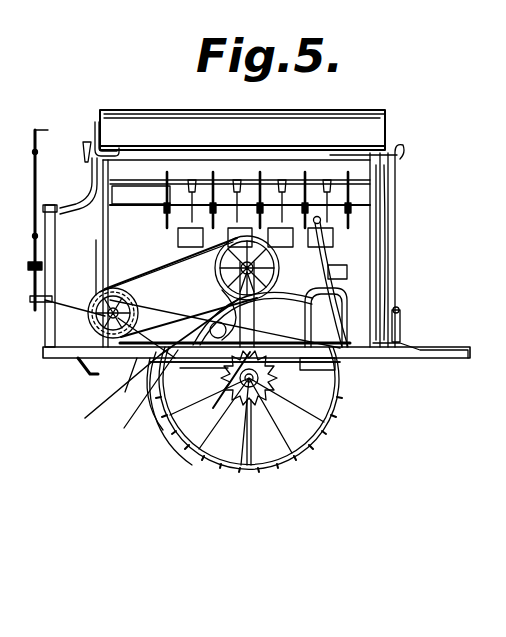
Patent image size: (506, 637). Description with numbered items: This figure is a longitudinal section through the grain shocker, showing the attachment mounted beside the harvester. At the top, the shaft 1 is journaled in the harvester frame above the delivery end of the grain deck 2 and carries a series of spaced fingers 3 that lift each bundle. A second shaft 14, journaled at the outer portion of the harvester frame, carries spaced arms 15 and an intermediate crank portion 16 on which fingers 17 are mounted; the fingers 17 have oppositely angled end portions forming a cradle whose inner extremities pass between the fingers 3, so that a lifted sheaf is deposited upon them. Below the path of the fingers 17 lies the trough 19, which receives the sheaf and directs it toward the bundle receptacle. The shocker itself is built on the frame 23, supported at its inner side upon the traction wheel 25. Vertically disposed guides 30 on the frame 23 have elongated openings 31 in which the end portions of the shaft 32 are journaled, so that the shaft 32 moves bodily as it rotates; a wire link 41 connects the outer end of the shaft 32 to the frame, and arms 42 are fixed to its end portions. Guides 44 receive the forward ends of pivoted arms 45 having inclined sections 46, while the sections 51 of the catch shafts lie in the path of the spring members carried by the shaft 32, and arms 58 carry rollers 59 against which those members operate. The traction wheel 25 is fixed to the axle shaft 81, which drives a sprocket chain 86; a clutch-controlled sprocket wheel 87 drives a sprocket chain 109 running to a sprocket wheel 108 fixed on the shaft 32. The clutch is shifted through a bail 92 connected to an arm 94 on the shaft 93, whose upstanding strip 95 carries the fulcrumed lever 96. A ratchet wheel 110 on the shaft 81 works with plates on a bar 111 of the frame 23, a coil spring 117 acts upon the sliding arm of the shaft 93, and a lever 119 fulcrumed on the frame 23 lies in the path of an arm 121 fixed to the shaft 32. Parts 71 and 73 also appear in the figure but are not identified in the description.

The shaft 1 is at (180, 183).
The grain deck 2 is at (312, 128).
The fingers 3 is at (213, 178).
The shaft 14 is at (100, 141).
The arms 15 is at (84, 196).
The crank portion 16 is at (129, 205).
The fingers 17 is at (170, 220).
The trough 19 is at (142, 129).
The frame 23 is at (452, 346).
The traction wheel 25 is at (334, 433).
The guides 30 is at (256, 345).
The elongated openings 31 is at (270, 286).
The shaft 32 is at (282, 270).
The wire link 41 is at (172, 282).
The arms 42 is at (135, 399).
The guides 44 is at (335, 250).
The arms 45 is at (147, 370).
The inclined sections 46 is at (336, 366).
The sections 51 is at (350, 297).
The arms 58 is at (362, 316).
The rollers 59 is at (358, 270).
The clamp 71 is at (28, 266).
The bracket 73 is at (401, 318).
The axle shaft 81 is at (272, 384).
The sprocket chain 86 is at (234, 414).
The sprocket wheel 87 is at (106, 292).
The bail 92 is at (90, 306).
The shaft 93 is at (128, 387).
The arm 94 is at (92, 368).
The upstanding strip 95 is at (30, 298).
The lever 96 is at (35, 206).
The sprocket wheel 108 is at (190, 252).
The sprocket chain 109 is at (96, 262).
The ratchet wheel 110 is at (262, 412).
The bar 111 is at (336, 399).
The coil spring 117 is at (210, 456).
The lever 119 is at (200, 384).
The arm 121 is at (225, 262).